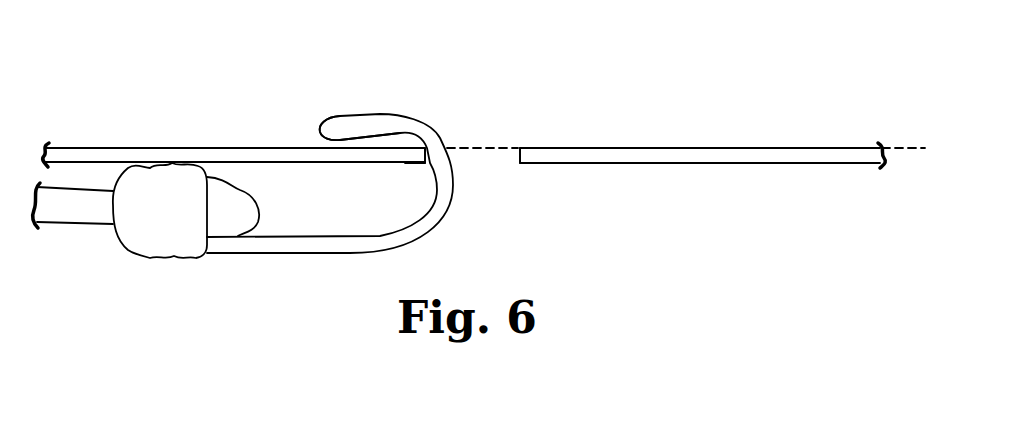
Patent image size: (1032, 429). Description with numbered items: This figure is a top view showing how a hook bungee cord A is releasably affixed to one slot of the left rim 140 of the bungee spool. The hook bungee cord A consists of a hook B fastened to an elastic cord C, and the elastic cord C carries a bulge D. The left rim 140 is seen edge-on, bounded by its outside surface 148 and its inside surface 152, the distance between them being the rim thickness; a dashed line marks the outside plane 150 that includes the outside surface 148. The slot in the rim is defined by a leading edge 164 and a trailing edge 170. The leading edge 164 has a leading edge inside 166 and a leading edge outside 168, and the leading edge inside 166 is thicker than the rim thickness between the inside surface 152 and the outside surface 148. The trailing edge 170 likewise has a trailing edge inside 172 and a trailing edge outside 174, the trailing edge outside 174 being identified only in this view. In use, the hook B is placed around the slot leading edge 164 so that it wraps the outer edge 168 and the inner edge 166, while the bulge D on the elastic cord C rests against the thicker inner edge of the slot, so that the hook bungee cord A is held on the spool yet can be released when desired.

The left rim 140 is at (220, 158).
The outside surface 148 is at (108, 149).
The inside surface 152 is at (75, 160).
The leading edge 164 is at (428, 147).
The leading edge inside 166 is at (397, 163).
The leading edge outside 168 is at (380, 150).
The trailing edge 170 is at (540, 146).
The trailing edge inside 172 is at (542, 163).
The trailing edge outside 174 is at (572, 148).
The outside plane 150 is at (910, 140).
The hook bungee cord A is at (257, 290).
The hook B is at (412, 130).
The elastic cord C is at (70, 207).
The bulge D is at (172, 233).